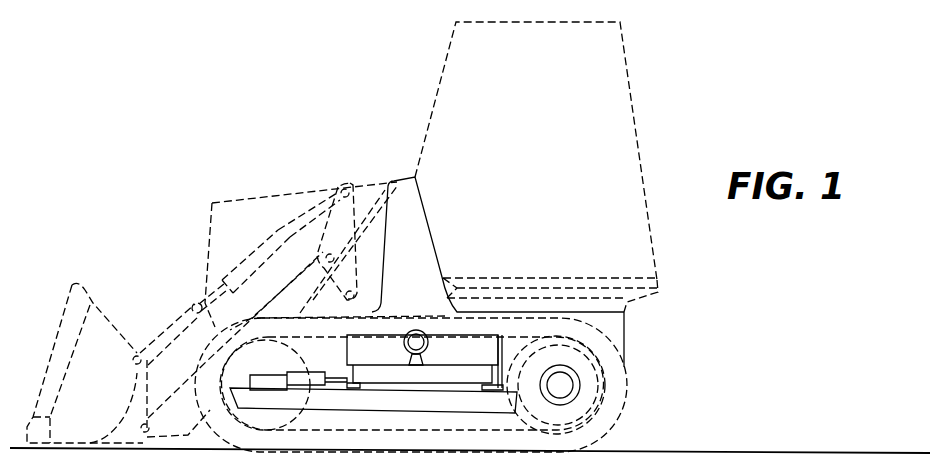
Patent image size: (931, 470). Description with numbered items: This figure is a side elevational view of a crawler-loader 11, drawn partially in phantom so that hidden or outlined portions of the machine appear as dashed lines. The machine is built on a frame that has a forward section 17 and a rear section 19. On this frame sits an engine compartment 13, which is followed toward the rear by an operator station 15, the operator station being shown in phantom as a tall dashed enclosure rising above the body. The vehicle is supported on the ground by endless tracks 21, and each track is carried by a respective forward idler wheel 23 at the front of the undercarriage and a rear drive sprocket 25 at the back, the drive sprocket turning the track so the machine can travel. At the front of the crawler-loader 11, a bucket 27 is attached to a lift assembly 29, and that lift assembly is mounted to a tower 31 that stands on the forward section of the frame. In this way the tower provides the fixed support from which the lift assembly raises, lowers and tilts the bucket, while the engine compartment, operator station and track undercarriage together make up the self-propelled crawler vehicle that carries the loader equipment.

The crawler-loader 11 is at (325, 57).
The engine compartment 13 is at (270, 196).
The operator station 15 is at (626, 66).
The forward section 17 is at (373, 412).
The rear section 19 is at (625, 329).
The endless tracks 21 is at (612, 428).
The forward idler wheel 23 is at (307, 356).
The rear drive sprocket 25 is at (503, 353).
The bucket 27 is at (118, 328).
The lift assembly 29 is at (197, 302).
The tower 31 is at (422, 206).